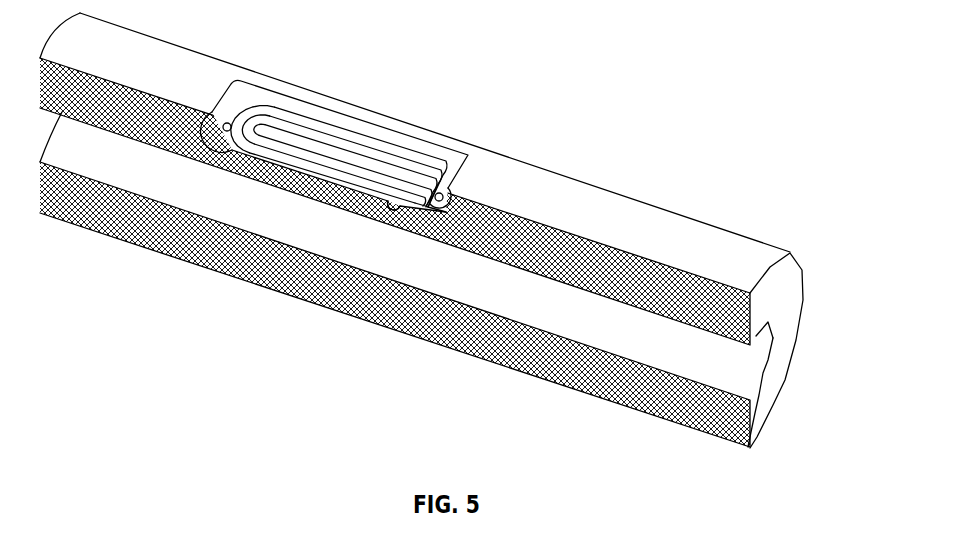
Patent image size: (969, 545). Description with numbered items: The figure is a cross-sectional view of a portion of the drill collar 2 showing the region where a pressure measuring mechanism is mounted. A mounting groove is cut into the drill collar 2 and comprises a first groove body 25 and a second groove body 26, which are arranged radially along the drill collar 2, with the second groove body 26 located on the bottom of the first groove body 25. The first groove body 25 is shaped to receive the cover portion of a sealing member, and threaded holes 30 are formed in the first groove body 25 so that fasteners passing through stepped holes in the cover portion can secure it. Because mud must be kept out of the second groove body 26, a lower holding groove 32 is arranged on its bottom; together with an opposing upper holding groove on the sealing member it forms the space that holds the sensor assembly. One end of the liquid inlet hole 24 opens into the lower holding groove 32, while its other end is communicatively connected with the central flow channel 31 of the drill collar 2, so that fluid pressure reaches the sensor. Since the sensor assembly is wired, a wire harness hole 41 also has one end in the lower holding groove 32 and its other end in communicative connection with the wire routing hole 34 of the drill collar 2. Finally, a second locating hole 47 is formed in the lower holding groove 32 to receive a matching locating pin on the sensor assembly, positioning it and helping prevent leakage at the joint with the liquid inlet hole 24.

The drill collar 2 is at (598, 377).
The liquid inlet hole 24 is at (397, 212).
The first groove body 25 is at (236, 110).
The second groove body 26 is at (225, 135).
The threaded hole 30 is at (444, 193).
The central flow channel 31 is at (735, 368).
The lower holding groove 32 is at (293, 162).
The wire routing hole 34 is at (754, 332).
The wire harness hole 41 is at (255, 168).
The second locating hole 47 is at (306, 195).